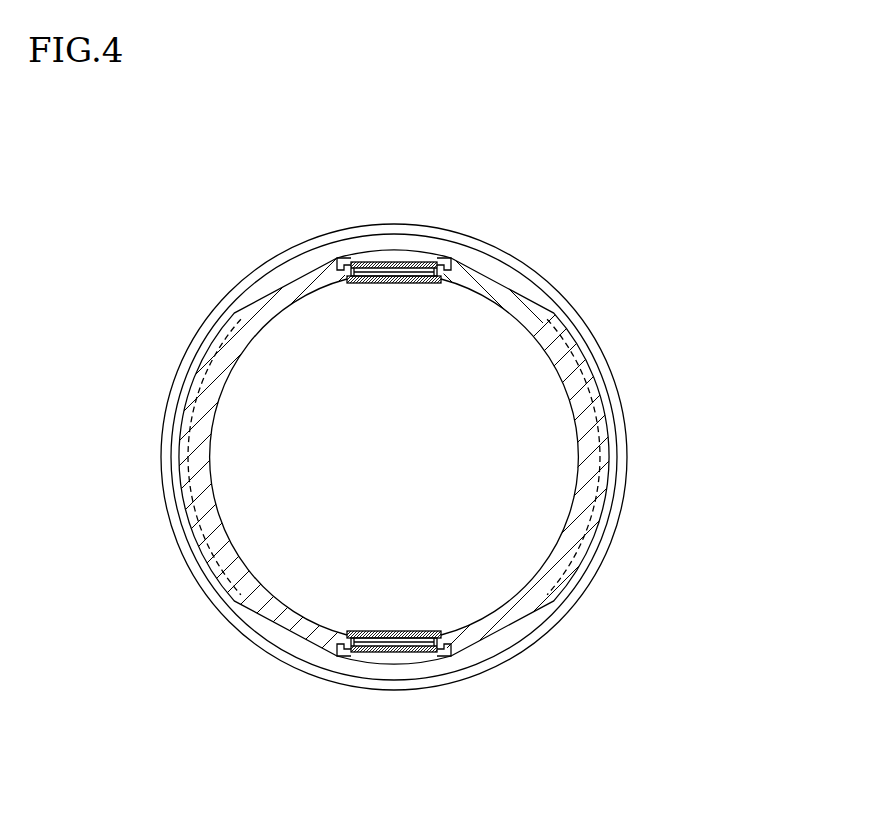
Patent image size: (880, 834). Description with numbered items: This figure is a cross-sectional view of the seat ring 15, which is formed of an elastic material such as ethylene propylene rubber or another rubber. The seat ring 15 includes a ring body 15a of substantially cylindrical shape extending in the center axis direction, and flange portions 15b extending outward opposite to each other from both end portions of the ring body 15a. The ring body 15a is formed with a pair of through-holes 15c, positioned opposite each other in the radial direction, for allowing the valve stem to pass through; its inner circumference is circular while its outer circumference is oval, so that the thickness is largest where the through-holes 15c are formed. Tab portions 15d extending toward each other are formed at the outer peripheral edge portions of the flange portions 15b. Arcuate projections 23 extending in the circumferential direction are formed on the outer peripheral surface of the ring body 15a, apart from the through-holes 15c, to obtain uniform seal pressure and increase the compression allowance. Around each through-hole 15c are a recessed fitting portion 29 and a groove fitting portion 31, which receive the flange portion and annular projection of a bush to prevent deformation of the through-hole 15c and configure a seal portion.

The seat ring 15 is at (564, 239).
The ring body 15a is at (474, 239).
The flange portions 15b is at (282, 272).
The through-holes 15c is at (360, 259).
The tab portions 15d is at (238, 283).
The arcuate projections 23 is at (183, 455).
The recessed fitting portion 29 is at (390, 262).
The groove fitting portion 31 is at (440, 266).